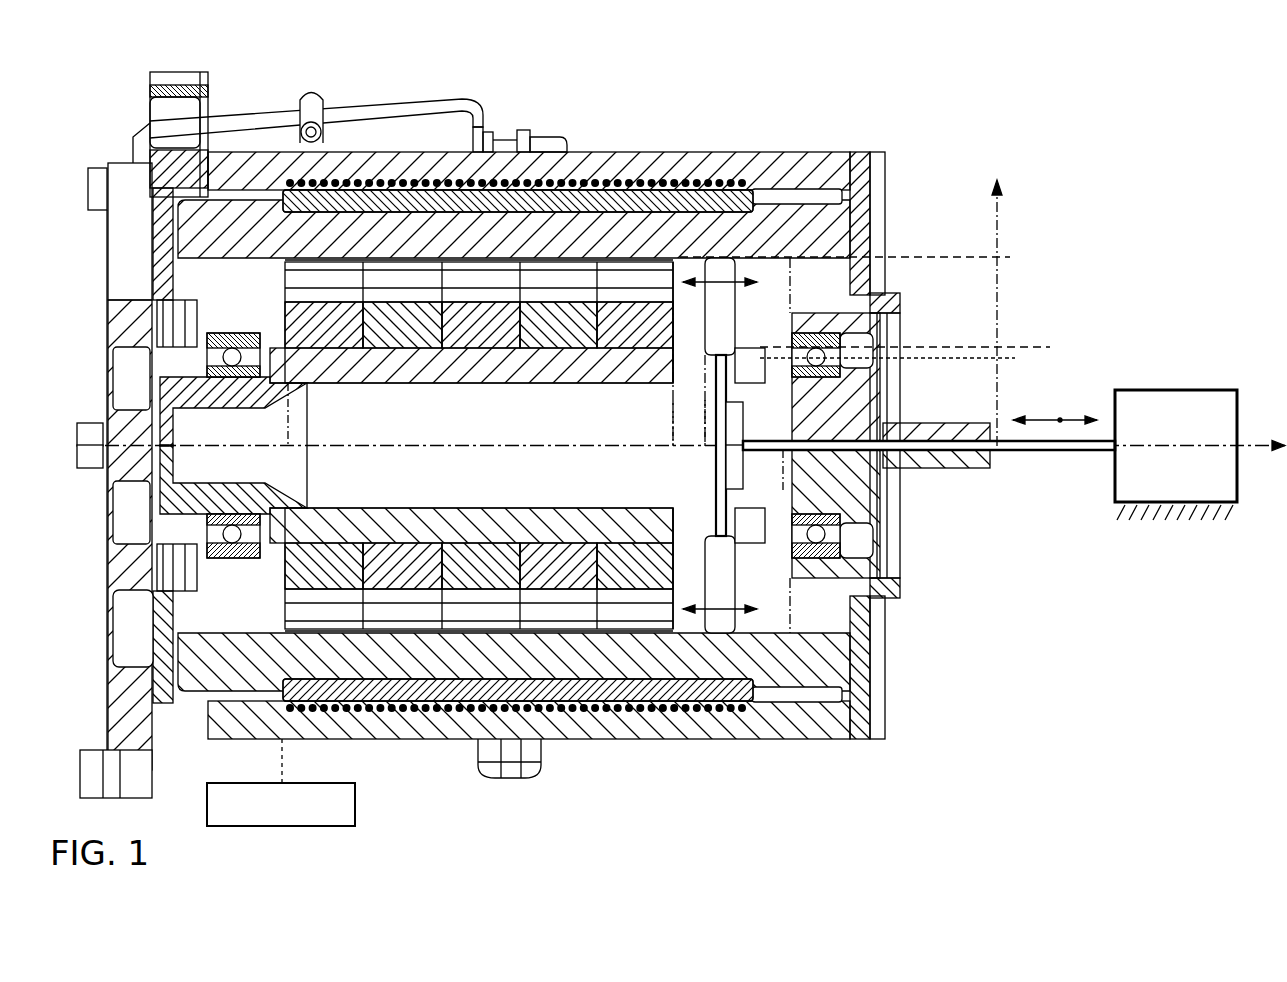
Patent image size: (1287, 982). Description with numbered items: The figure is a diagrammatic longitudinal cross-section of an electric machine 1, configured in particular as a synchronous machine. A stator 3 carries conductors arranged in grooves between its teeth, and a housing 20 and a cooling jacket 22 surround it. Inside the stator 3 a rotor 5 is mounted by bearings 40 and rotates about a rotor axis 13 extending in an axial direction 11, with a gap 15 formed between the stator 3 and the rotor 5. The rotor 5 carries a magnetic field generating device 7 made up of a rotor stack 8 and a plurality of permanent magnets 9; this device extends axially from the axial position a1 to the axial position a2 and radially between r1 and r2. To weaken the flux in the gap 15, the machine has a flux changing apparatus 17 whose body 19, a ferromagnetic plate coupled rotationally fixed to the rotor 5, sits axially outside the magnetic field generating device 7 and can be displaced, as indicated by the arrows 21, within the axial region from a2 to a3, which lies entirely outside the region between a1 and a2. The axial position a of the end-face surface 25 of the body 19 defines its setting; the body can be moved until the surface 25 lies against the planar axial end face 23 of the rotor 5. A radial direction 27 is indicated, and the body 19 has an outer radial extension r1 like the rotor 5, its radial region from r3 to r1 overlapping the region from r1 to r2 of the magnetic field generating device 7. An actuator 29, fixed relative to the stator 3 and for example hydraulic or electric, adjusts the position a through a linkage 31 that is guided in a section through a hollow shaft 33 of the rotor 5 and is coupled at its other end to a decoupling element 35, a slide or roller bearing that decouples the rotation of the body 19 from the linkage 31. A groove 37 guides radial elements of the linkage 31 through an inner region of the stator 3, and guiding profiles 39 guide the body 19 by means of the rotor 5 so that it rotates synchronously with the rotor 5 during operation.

The electric machine 1 is at (665, 441).
The stator 3 is at (514, 387).
The rotor 5 is at (225, 292).
The magnetic field generating device 7 is at (471, 445).
The rotor stack 8 is at (478, 327).
The permanent magnets 9 is at (342, 278).
The axial direction 11 is at (1263, 446).
The rotor axis 13 is at (483, 446).
The gap 15 is at (250, 263).
The flux changing apparatus 17 is at (1165, 370).
The body 19 is at (717, 268).
The housing 20 is at (538, 167).
The arrows 21 is at (727, 282).
The cooling jacket 22 is at (622, 202).
The axial end face 23 is at (680, 323).
The end-face surface 25 is at (690, 268).
The radial direction 27 is at (997, 207).
The actuator 29 is at (1140, 390).
The linkage 31 is at (720, 498).
The hollow shaft 33 is at (332, 367).
The decoupling element 35 is at (735, 418).
The groove 37 is at (752, 517).
The guiding profiles 39 is at (800, 565).
The bearings 40 is at (232, 534).
The axial position a is at (705, 446).
The axial position a1 is at (288, 446).
The axial position a2 is at (673, 446).
The axial position a3 is at (783, 450).
The outer radial extension r1 is at (859, 250).
The radial extension r2 is at (916, 340).
The radial extension r3 is at (900, 355).